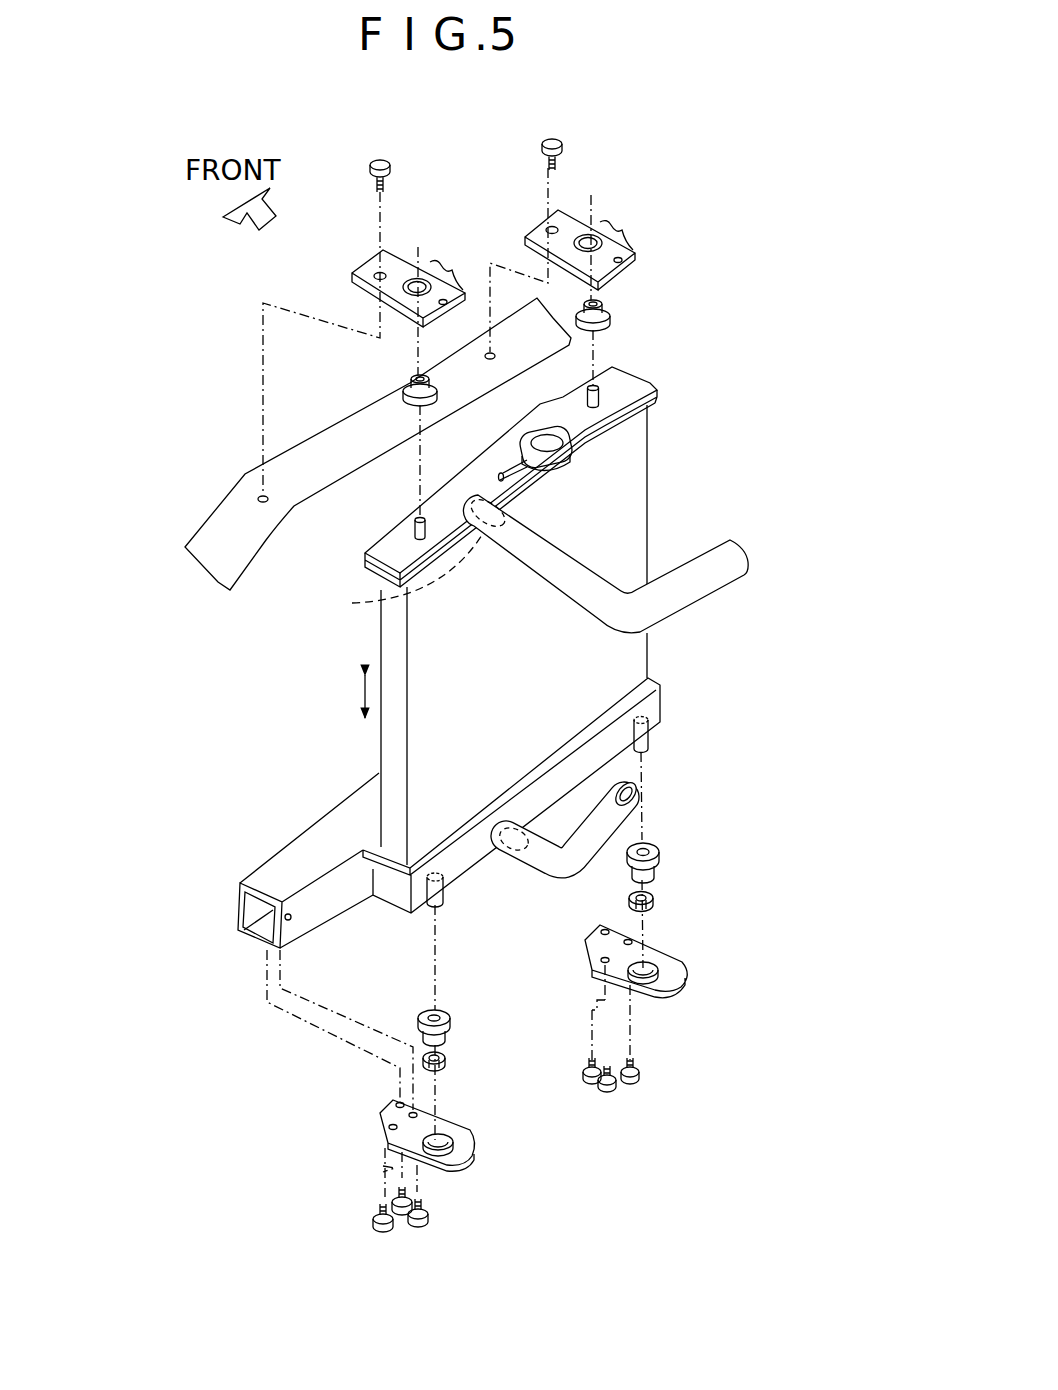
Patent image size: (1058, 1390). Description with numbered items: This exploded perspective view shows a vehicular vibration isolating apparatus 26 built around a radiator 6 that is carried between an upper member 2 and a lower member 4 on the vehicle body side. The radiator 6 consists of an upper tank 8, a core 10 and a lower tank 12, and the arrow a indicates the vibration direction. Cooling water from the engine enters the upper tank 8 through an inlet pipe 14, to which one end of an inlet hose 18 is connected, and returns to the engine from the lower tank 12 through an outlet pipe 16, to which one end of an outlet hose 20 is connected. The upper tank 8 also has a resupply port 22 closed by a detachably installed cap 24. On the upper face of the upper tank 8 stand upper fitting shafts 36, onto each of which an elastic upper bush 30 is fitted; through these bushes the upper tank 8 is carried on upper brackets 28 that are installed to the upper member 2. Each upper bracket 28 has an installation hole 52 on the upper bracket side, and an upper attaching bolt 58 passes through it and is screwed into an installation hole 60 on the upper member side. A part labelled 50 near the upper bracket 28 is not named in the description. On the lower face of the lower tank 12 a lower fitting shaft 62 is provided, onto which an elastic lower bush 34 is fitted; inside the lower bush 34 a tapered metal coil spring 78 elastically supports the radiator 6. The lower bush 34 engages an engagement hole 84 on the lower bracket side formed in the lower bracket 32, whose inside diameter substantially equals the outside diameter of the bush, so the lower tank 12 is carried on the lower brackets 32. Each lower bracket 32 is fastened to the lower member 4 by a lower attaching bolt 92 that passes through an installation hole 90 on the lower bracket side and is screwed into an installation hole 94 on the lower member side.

The upper member 2 is at (212, 500).
The lower member 4 is at (284, 844).
The radiator 6 is at (553, 730).
The upper tank 8 is at (665, 381).
The core 10 is at (654, 548).
The lower tank 12 is at (666, 709).
The inlet pipe 14 is at (406, 574).
The outlet pipe 16 is at (512, 862).
The inlet hose 18 is at (676, 600).
The outlet hose 20 is at (623, 813).
The resupply port 22 is at (566, 456).
The cap 24 is at (570, 446).
The vehicular vibration isolating apparatus 26 is at (276, 685).
The upper bracket 28 is at (397, 247).
The upper bush 30 is at (402, 391).
The lower bracket 32 is at (467, 1115).
The lower bush 34 is at (451, 1006).
The upper fitting shaft 36 is at (414, 528).
The clip nut 50 is at (421, 280).
The installation hole on the upper bracket side 52 is at (375, 272).
The upper attaching bolt 58 is at (386, 162).
The installation hole on the upper member side 60 is at (258, 497).
The lower fitting shaft 62 is at (444, 897).
The spring 78 is at (449, 1047).
The engagement hole on the lower bracket side 84 is at (448, 1136).
The installation hole on the lower bracket side 90 is at (387, 1130).
The lower attaching bolt 92 is at (375, 1217).
The installation hole on the lower member side 94 is at (273, 928).
The vibration direction a is at (362, 690).